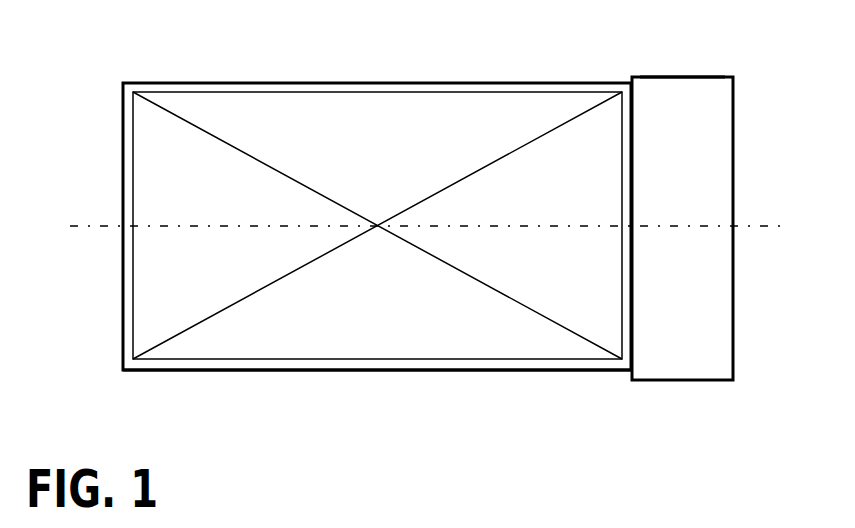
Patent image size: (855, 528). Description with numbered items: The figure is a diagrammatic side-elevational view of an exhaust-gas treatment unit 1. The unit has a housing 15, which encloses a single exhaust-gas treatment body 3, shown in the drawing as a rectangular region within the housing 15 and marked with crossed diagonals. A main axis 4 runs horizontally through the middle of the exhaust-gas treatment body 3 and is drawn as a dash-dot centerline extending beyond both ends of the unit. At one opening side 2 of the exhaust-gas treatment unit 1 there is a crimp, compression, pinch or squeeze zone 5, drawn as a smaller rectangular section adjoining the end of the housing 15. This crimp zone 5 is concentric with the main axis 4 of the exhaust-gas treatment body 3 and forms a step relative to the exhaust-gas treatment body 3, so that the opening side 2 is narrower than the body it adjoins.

The exhaust-gas treatment unit 1 is at (268, 70).
The opening side 2 is at (733, 336).
The exhaust-gas treatment body 3 is at (430, 327).
The main axis 4 is at (95, 225).
The crimp zone 5 is at (680, 76).
The housing 15 is at (188, 371).